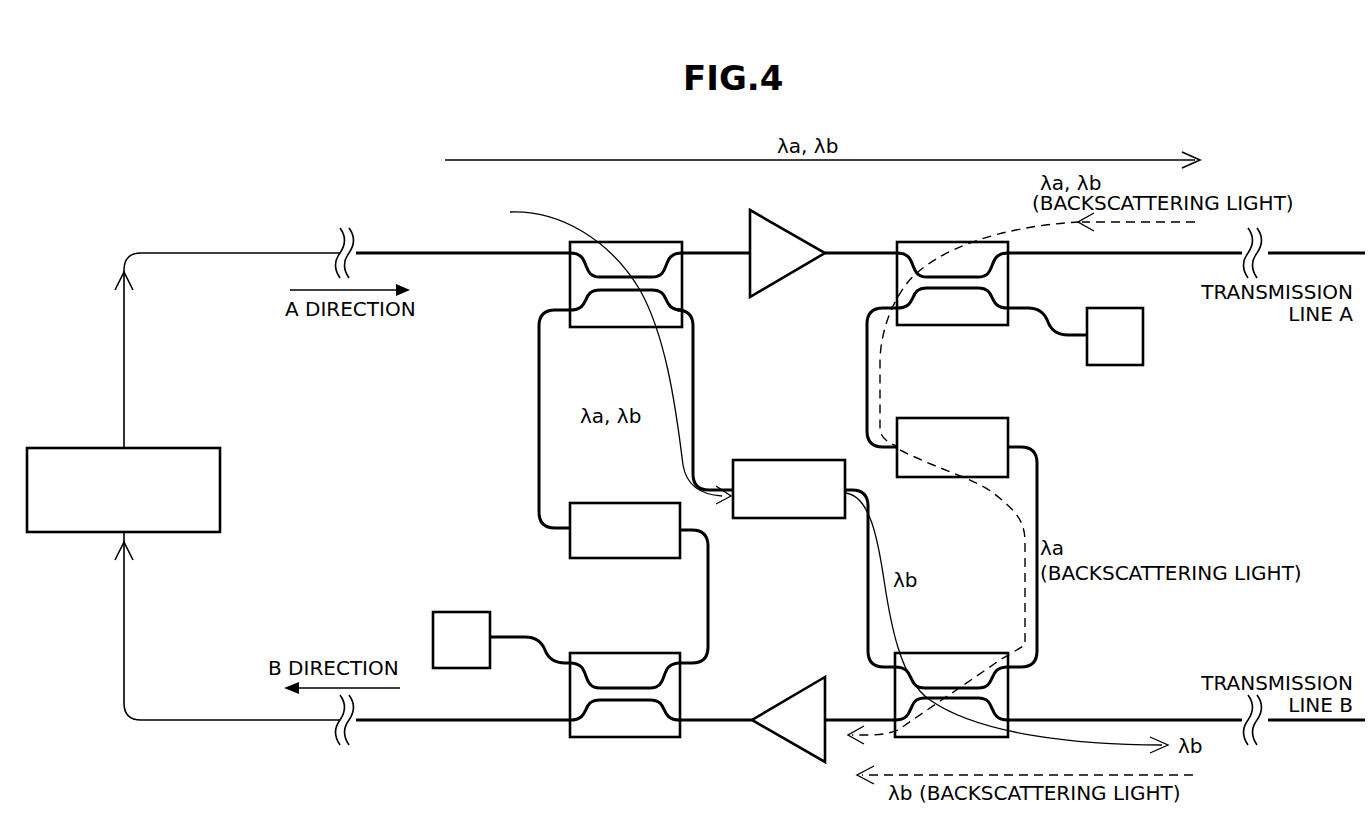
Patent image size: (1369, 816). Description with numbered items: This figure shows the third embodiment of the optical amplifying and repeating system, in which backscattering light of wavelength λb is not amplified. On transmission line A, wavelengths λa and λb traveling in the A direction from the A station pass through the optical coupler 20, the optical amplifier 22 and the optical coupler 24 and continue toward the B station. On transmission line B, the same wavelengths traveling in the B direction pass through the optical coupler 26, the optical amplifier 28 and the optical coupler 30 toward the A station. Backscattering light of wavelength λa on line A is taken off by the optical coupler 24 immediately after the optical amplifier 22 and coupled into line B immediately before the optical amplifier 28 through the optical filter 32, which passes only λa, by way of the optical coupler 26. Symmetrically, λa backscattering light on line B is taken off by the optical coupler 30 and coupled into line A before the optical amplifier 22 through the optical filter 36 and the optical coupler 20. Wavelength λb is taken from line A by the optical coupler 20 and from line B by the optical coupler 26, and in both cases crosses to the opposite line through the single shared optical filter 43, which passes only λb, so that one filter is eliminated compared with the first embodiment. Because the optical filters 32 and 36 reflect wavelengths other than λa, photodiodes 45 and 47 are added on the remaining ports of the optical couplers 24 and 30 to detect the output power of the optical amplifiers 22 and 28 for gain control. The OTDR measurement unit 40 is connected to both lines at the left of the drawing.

The optical coupler 20 is at (633, 241).
The optical amplifier 22 is at (795, 238).
The optical coupler 24 is at (1010, 273).
The optical coupler 26 is at (951, 653).
The optical amplifier 28 is at (782, 700).
The optical coupler 30 is at (594, 654).
The optical filter 32 is at (989, 418).
The optical filter 36 is at (570, 553).
The OTDR measurement unit 40 is at (220, 490).
The optical filter 43 is at (784, 460).
The photodiode 45 is at (1143, 335).
The photodiode 47 is at (462, 612).